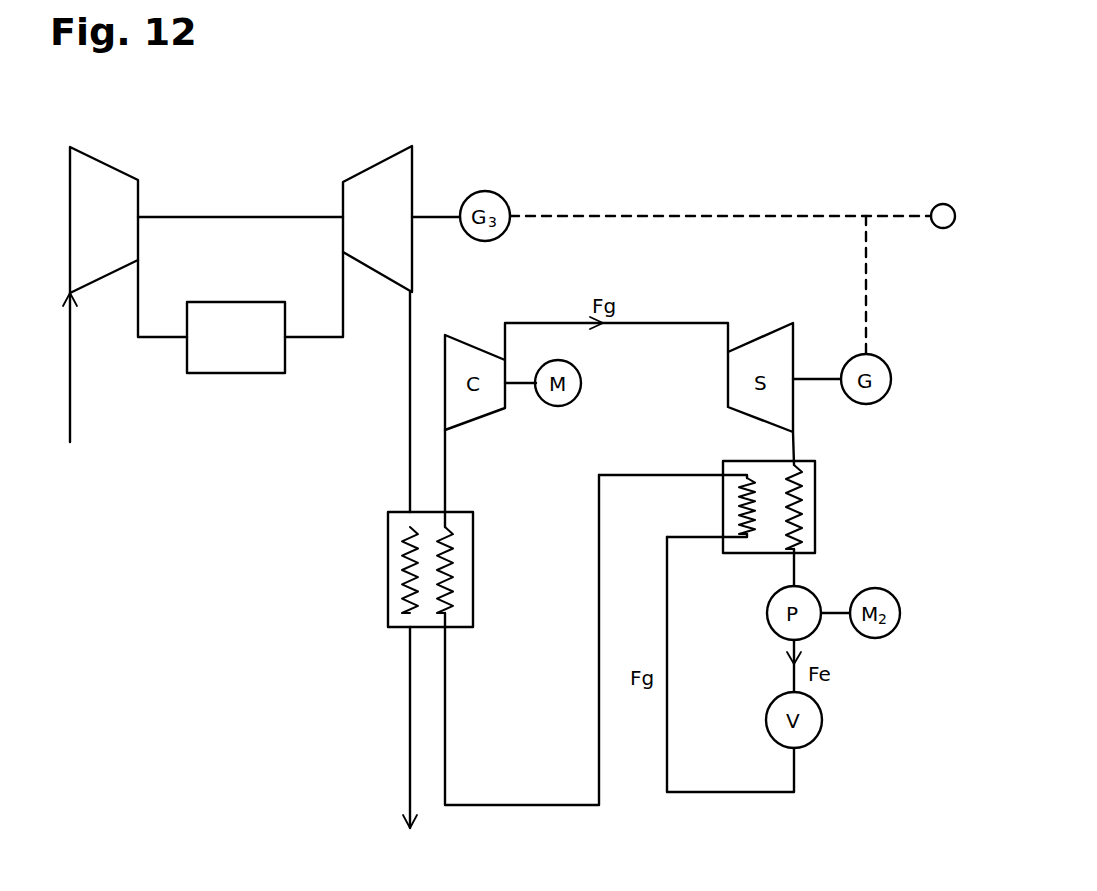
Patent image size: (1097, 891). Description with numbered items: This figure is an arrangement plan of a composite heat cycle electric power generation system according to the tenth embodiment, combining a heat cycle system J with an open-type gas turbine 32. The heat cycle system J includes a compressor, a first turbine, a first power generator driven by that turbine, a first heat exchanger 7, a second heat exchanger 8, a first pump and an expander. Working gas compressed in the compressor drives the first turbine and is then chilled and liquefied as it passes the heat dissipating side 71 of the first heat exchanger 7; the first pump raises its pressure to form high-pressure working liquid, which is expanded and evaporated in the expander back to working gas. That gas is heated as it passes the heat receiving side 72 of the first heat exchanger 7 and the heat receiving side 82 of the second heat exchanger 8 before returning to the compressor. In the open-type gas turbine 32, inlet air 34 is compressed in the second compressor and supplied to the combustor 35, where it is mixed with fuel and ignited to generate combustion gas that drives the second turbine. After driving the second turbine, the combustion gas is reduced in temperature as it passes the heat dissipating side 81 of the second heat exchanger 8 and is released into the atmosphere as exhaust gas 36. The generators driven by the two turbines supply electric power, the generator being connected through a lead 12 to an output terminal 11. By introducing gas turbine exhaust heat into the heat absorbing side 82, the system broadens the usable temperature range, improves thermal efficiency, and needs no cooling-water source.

The open-type gas turbine 32 is at (235, 175).
The inlet air 34 is at (70, 384).
The combustor 35 is at (240, 312).
The exhaust gas outlet 36 is at (409, 576).
The lead 12 is at (580, 215).
The output terminal 11 is at (943, 204).
The heat cycle system J is at (647, 172).
The first heat exchanger 7 is at (818, 478).
The heat dissipating side of the first heat exchanger 71 is at (796, 522).
The heat receiving side of the first heat exchanger 72 is at (757, 525).
The second heat exchanger 8 is at (475, 540).
The heat dissipating side of the second heat exchanger 81 is at (410, 585).
The heat receiving side of the second heat exchanger 82 is at (450, 572).